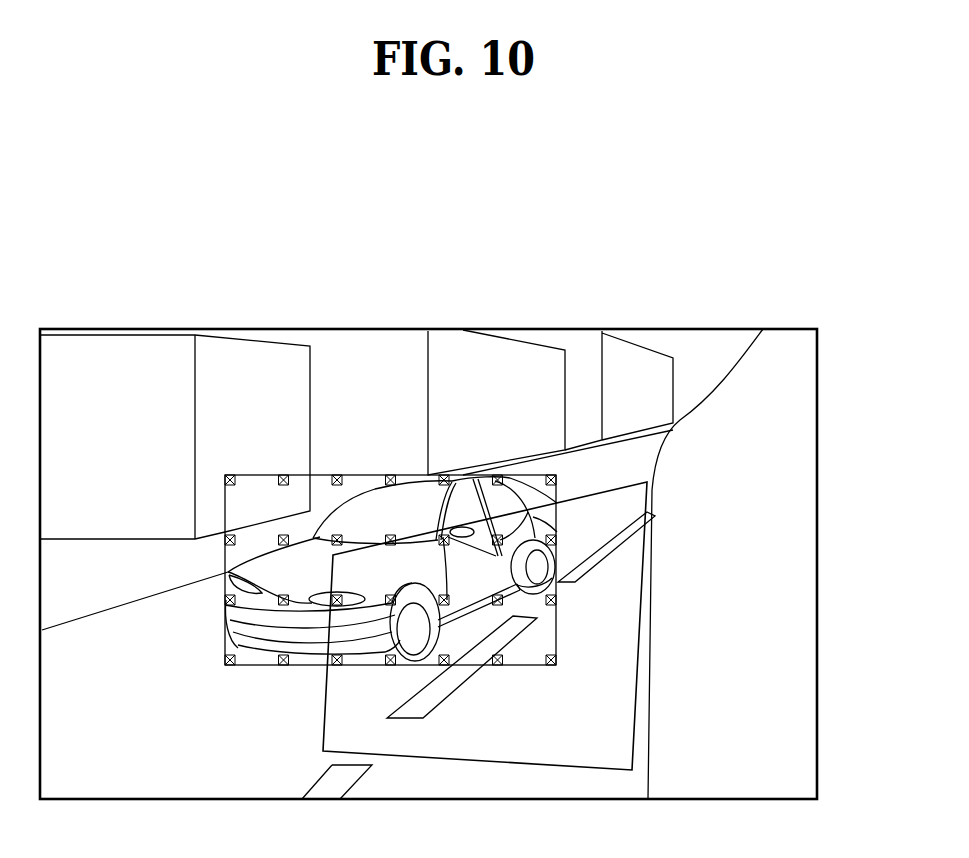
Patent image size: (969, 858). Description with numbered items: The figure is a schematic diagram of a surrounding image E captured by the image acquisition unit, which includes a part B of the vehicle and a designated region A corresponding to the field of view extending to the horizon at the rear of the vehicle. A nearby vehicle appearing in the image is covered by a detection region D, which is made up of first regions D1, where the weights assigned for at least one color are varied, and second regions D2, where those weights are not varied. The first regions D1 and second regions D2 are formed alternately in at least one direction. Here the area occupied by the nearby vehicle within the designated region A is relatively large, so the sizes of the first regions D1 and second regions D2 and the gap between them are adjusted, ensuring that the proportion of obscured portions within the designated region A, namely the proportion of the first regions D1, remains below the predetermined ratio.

The designated region A is at (340, 752).
The part of the vehicle B is at (805, 683).
The detection region D is at (288, 280).
The first regions D1 is at (230, 478).
The second regions D2 is at (260, 483).
The surrounding image E is at (718, 329).